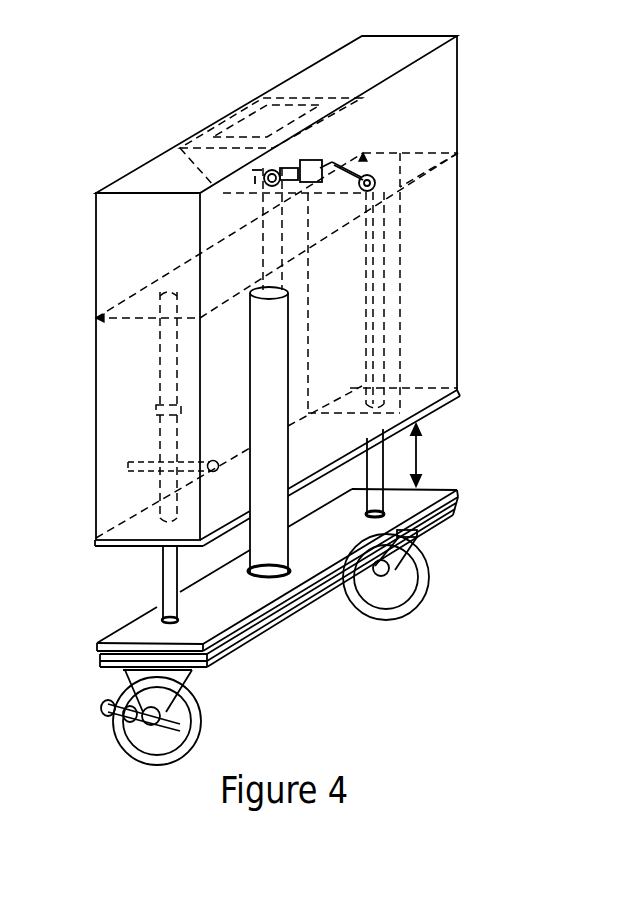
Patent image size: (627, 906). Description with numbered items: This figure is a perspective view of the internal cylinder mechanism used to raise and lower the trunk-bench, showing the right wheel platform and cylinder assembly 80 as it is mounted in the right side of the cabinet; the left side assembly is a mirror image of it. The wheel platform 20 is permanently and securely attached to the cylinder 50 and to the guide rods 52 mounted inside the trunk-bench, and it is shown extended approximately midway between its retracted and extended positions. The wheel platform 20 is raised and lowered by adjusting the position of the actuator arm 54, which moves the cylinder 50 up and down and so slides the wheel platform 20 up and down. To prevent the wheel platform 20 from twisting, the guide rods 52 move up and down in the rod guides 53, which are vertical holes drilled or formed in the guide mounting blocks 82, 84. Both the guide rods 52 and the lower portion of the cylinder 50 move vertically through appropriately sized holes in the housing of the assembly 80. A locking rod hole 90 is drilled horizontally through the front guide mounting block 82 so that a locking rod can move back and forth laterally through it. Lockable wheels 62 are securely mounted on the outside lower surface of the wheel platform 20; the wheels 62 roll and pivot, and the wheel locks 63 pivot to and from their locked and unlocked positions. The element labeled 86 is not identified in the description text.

The wheel platform 20 is at (467, 503).
The cylinder 50 is at (280, 337).
The guide rod 52 is at (165, 425).
The rod guide 53 is at (165, 332).
The actuator arm 54 is at (383, 182).
The lockable wheel 62 is at (212, 715).
The wheel lock 63 is at (100, 707).
The wheel platform and cylinder assembly 80 is at (423, 88).
The front guide mounting block 82 is at (130, 373).
The guide mounting block 84 is at (428, 247).
The lid 86 is at (213, 164).
The locking rod hole 90 is at (122, 468).